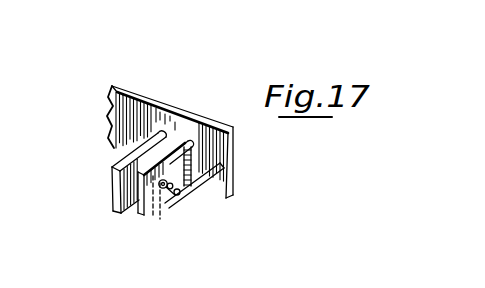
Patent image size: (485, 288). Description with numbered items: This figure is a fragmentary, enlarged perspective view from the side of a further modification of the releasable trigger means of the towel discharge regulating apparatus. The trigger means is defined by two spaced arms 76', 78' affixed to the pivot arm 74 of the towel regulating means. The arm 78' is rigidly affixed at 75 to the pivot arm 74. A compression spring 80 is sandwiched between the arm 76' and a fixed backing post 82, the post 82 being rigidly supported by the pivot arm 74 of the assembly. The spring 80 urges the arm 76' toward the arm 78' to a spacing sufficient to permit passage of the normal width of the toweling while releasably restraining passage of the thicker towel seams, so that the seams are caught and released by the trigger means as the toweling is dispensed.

The pivot arm 74 is at (128, 103).
The rigid affixing point 75 is at (190, 141).
The arm 76' is at (126, 210).
The arm 78' is at (112, 172).
The compression spring 80 is at (174, 197).
The fixed backing post 82 is at (195, 190).